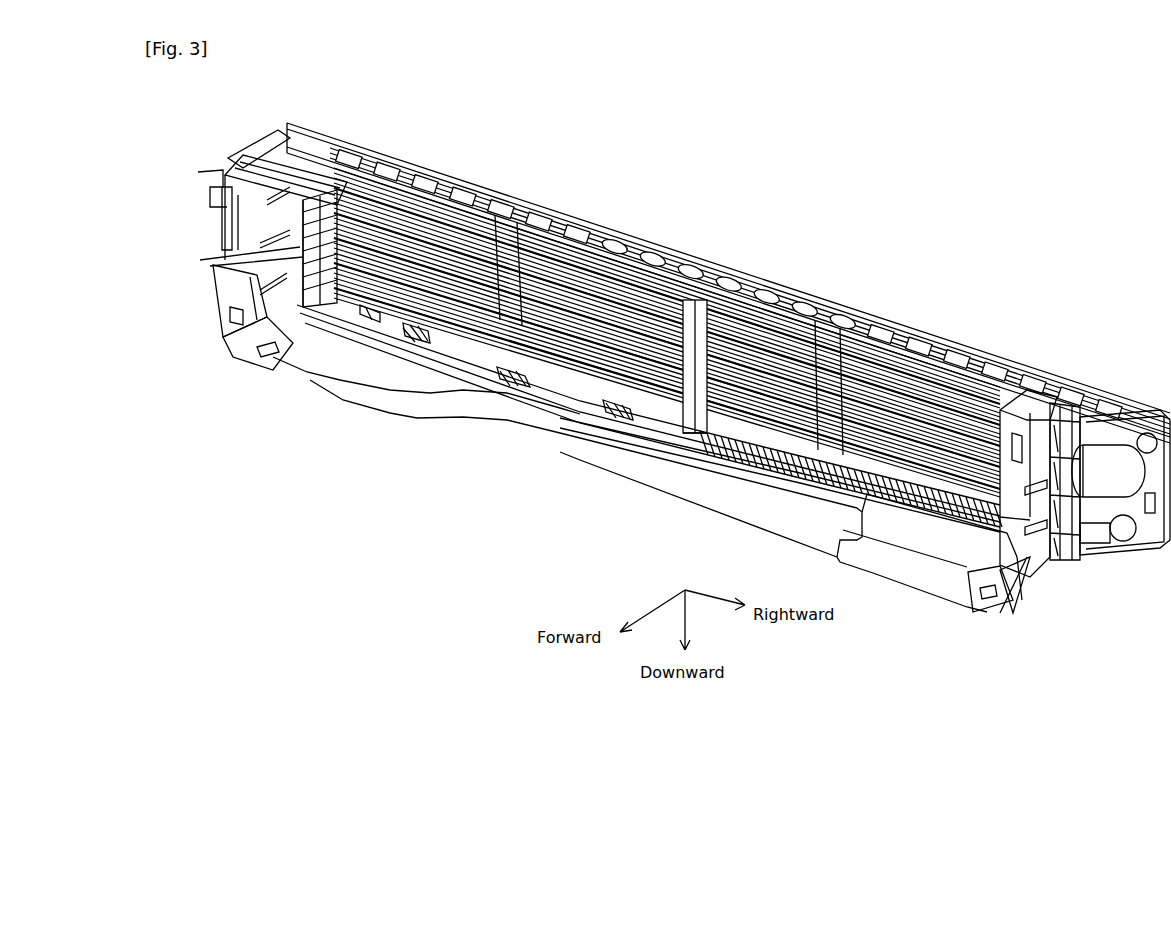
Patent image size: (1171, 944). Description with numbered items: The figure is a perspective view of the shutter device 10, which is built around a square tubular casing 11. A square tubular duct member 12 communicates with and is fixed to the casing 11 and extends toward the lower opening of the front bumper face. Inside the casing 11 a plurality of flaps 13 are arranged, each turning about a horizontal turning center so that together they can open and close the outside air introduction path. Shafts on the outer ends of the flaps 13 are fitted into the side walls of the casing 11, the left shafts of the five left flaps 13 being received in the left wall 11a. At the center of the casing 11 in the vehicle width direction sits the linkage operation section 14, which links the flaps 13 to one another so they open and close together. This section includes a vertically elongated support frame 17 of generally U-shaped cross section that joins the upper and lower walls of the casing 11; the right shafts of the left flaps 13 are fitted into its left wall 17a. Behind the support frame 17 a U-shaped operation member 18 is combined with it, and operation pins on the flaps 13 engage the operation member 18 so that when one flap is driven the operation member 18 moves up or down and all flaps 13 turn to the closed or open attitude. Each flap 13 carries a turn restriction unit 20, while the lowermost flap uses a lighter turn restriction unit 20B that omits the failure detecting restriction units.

The shutter device 10 is at (748, 200).
The casing 11 is at (770, 282).
The left wall 11a is at (378, 153).
The duct member 12 is at (387, 410).
The flaps 13 is at (577, 364).
The linkage operation section 14 is at (657, 403).
The support frame 17 is at (662, 415).
The left wall 17a is at (697, 440).
The operation member 18 is at (727, 433).
The turn restriction unit 20 is at (230, 258).
The turn restriction unit 20B is at (330, 292).